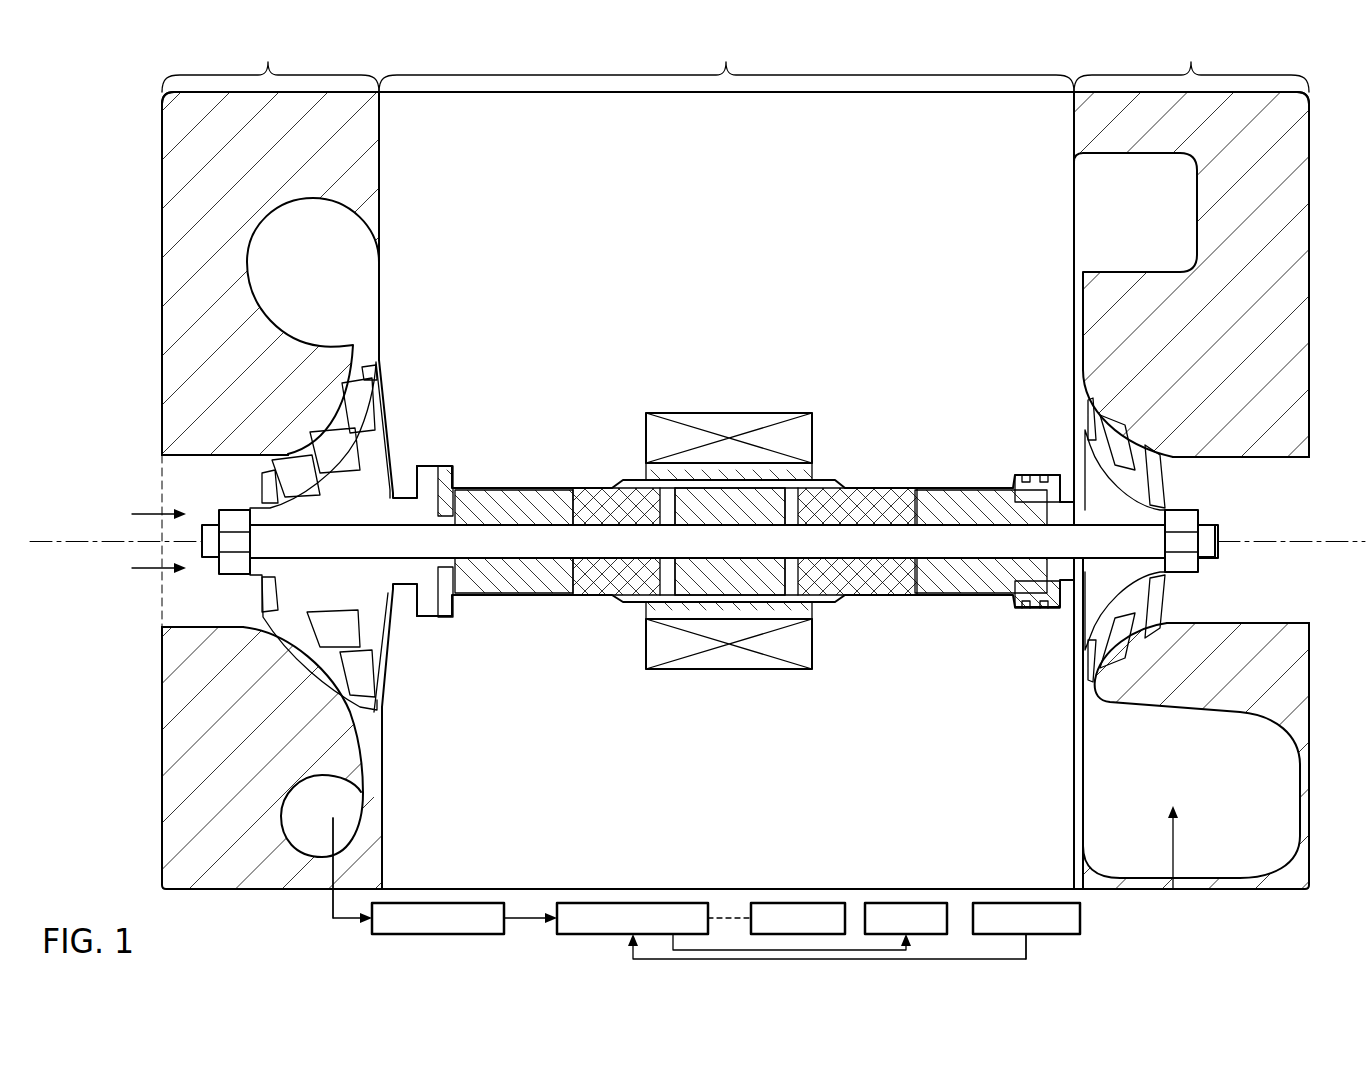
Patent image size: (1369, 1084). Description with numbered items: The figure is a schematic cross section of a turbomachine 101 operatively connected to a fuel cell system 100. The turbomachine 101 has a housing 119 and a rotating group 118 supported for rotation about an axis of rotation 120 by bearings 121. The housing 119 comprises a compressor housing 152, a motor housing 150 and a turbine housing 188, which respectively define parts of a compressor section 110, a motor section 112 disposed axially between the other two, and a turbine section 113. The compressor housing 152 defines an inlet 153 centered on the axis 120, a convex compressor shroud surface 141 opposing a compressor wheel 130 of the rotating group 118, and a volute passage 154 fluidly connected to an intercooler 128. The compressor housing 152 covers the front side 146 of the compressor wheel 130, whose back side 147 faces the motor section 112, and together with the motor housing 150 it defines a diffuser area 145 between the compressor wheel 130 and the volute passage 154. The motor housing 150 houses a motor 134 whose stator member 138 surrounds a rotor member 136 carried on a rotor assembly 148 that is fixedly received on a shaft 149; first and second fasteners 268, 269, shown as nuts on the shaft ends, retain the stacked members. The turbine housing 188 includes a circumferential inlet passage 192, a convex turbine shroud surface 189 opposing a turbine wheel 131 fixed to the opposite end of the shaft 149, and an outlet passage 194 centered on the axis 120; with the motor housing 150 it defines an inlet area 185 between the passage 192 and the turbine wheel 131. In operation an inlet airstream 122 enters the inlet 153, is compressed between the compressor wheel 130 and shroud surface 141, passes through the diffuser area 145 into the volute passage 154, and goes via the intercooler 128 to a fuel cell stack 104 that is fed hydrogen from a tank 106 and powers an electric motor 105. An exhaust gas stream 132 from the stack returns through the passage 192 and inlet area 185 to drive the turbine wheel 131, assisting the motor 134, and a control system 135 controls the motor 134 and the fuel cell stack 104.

The fuel cell system 100 is at (557, 941).
The turbomachine 101 is at (148, 90).
The fuel cell stack 104 is at (605, 903).
The electric motor 105 is at (912, 903).
The tank 106 is at (1080, 918).
The compressor section 110 is at (272, 461).
The motor section 112 is at (726, 461).
The turbine section 113 is at (1191, 461).
The rotating group 118 is at (598, 497).
The housing 119 is at (152, 272).
The axis of rotation 120 is at (60, 541).
The bearings 121 is at (457, 478).
The inlet airstream 122 is at (135, 571).
The intercooler 128 is at (448, 903).
The compressor wheel 130 is at (322, 591).
The turbine wheel 131 is at (1108, 633).
The exhaust gas stream 132 is at (1173, 889).
The motor 134 is at (815, 413).
The control system 135 is at (805, 903).
The motor rotor member 136 is at (738, 518).
The motor stator member 138 is at (716, 412).
The compressor shroud surface 141 is at (305, 456).
The diffuser area 145 is at (375, 320).
The front side 146 is at (320, 650).
The back side 147 is at (386, 692).
The rotor assembly 148 is at (657, 475).
The shaft 149 is at (548, 542).
The motor housing 150 is at (752, 205).
The compressor housing 152 is at (205, 169).
The inlet 153 is at (162, 463).
The volute passage 154 is at (330, 279).
The inlet area 185 is at (1072, 317).
The turbine housing 188 is at (1262, 161).
The turbine shroud surface 189 is at (1130, 451).
The circumferential inlet passage 192 is at (1154, 225).
The outlet passage 194 is at (1300, 461).
The first fastener 268 is at (232, 515).
The second fastener 269 is at (1195, 569).